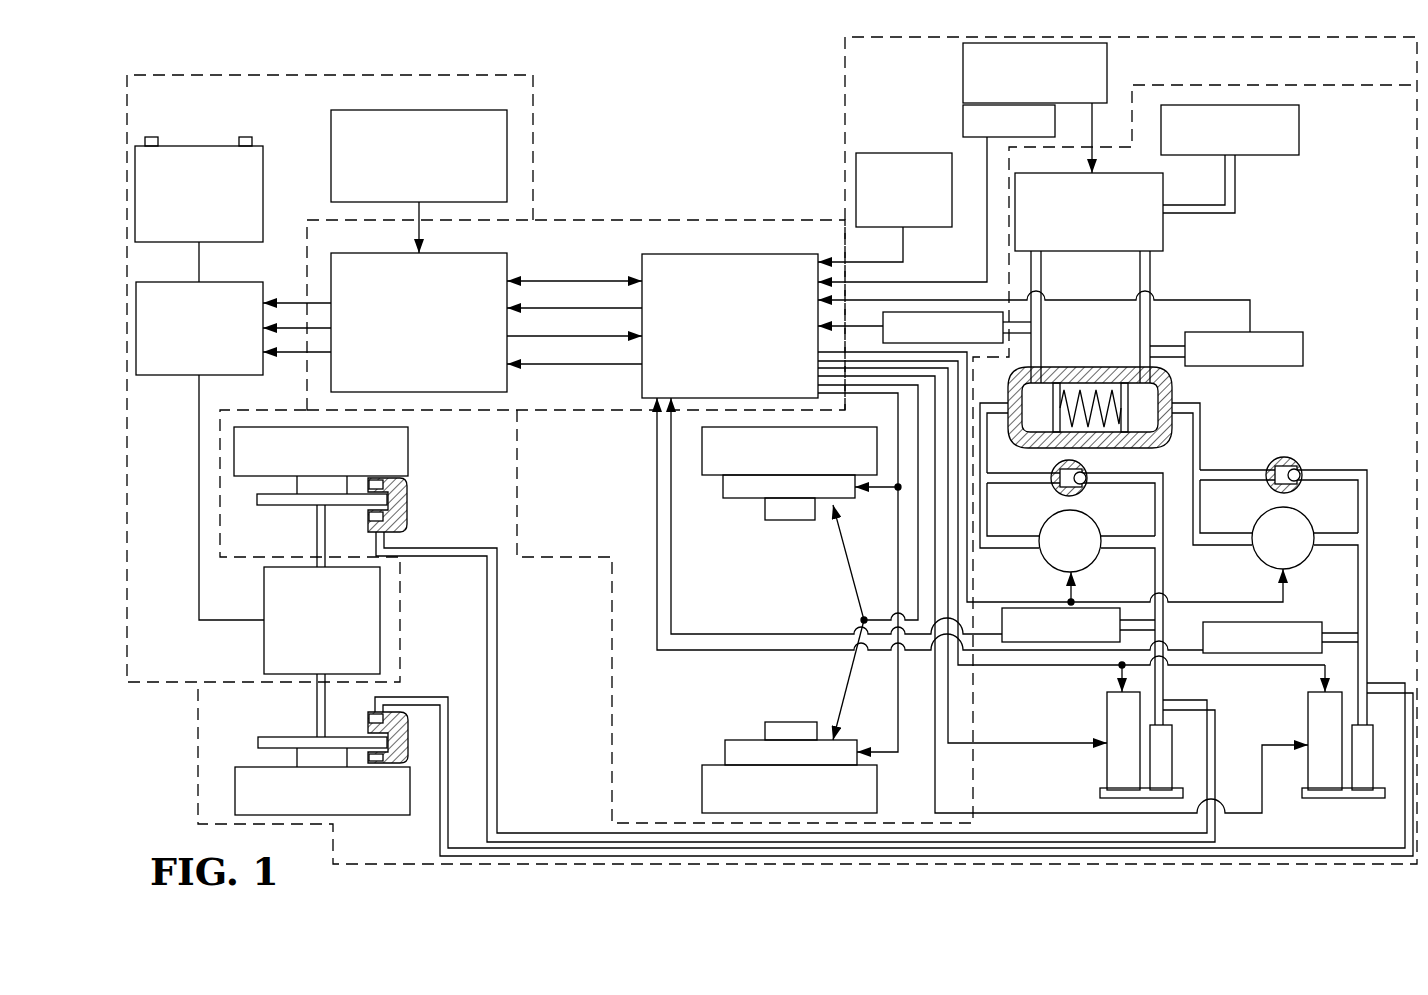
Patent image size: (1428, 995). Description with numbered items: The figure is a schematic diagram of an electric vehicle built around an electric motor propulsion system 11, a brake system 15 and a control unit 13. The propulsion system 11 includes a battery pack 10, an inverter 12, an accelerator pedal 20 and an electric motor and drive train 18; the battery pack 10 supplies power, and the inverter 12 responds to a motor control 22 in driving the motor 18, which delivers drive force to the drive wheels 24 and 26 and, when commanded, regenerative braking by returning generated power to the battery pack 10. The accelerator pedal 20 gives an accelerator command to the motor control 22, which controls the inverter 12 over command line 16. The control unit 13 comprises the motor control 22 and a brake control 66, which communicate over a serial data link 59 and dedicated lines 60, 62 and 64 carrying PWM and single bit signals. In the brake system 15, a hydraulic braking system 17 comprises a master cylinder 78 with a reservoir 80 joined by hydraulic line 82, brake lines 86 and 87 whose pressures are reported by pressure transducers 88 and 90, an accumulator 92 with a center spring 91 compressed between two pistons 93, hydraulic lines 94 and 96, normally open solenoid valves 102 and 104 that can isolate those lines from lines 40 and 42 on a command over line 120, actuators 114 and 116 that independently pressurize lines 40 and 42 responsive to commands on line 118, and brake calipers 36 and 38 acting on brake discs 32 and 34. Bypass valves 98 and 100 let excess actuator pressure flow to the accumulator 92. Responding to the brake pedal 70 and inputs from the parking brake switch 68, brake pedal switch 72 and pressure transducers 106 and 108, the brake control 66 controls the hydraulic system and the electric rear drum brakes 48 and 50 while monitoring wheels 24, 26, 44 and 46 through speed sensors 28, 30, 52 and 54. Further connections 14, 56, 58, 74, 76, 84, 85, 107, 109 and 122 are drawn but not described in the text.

The battery pack 10 is at (190, 152).
The electric motor propulsion system 11 is at (533, 107).
The inverter 12 is at (172, 362).
The control unit 13 is at (699, 219).
The power line to motor 14 is at (198, 545).
The brake system 15 is at (845, 113).
The command line 16 is at (293, 290).
The hydraulic braking system 17 is at (1256, 80).
The electric motor and drive train 18 is at (277, 637).
The accelerator pedal 20 is at (341, 122).
The motor control 22 is at (460, 266).
The drive wheel 24 is at (390, 445).
The drive wheel 26 is at (355, 805).
The speed sensor 28 is at (303, 483).
The speed sensor 30 is at (303, 758).
The brake disc 32 is at (305, 505).
The brake disc 34 is at (285, 742).
The brake caliper 36 is at (400, 497).
The brake caliper 38 is at (400, 738).
The hydraulic line 40 is at (492, 640).
The hydraulic line 42 is at (418, 700).
The vehicle wheel 44 is at (718, 445).
The vehicle wheel 46 is at (713, 790).
The electric drum brake 48 is at (748, 488).
The electric drum brake 50 is at (750, 753).
The speed sensor 52 is at (792, 512).
The speed sensor 54 is at (795, 727).
The actuator control line 56 is at (912, 628).
The rear actuator control line 58 is at (900, 715).
The serial data link 59 is at (588, 280).
The communication line 60 is at (618, 307).
The communication line 62 is at (572, 338).
The communication line 64 is at (563, 366).
The brake control 66 is at (685, 265).
The parking brake switch 68 is at (945, 158).
The brake pedal 70 is at (975, 90).
The brake pedal switch 72 is at (963, 125).
The park brake switch signal line 74 is at (862, 260).
The brake switch signal line 76 is at (955, 277).
The master cylinder 78 is at (1160, 232).
The reservoir 80 is at (1288, 147).
The hydraulic line 82 is at (1232, 192).
The brake control output lines 84 is at (862, 330).
The pressure sensor signal line 85 is at (918, 299).
The brake line 86 is at (1037, 265).
The brake line 87 is at (1145, 268).
The pressure transducer 88 is at (998, 344).
The pressure transducer 90 is at (1305, 340).
The center spring 91 is at (1073, 395).
The accumulator 92 is at (1120, 370).
The pistons 93 is at (1055, 415).
The hydraulic line 94 is at (985, 525).
The hydraulic line 96 is at (1195, 425).
The bypass valve 98 is at (1055, 497).
The bypass valve 100 is at (1278, 460).
The solenoid valve 102 is at (1082, 520).
The solenoid valve 104 is at (1313, 518).
The pressure transducer 106 is at (1030, 643).
The pressure sensor signal line 107 is at (673, 592).
The pressure transducer 108 is at (1268, 653).
The pressure sensor signal line 109 is at (657, 557).
The actuator 114 is at (1130, 797).
The actuator 116 is at (1332, 798).
The command line 118 is at (960, 813).
The command line 120 is at (1250, 600).
The modulator control line 122 is at (1062, 667).